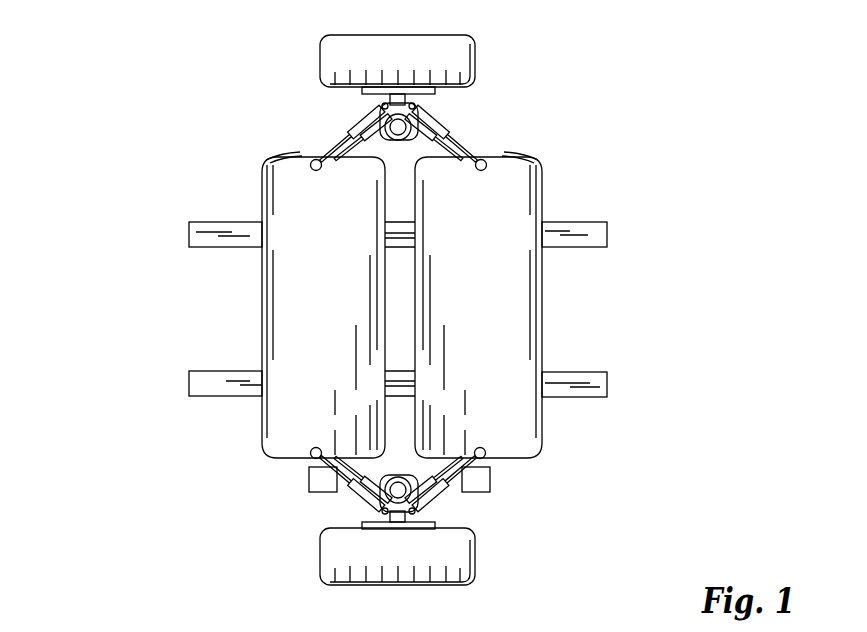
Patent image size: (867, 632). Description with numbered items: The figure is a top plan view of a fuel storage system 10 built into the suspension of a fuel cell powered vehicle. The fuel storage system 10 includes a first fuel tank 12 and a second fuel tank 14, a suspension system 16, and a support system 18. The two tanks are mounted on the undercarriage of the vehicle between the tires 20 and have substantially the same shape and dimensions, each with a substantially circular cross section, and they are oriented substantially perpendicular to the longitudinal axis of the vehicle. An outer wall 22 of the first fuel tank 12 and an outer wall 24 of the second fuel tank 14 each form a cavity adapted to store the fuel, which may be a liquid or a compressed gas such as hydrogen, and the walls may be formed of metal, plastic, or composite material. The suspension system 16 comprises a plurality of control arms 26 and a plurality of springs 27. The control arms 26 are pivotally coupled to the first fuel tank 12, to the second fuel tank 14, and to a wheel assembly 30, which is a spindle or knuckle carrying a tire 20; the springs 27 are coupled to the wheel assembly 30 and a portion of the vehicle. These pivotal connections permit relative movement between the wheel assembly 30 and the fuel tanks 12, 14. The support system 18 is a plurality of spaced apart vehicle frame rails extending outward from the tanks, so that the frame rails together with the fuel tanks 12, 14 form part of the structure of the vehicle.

The fuel storage system 10 is at (353, 324).
The first fuel tank 12 is at (276, 305).
The second fuel tank 14 is at (518, 305).
The suspension system 16 is at (388, 324).
The support system 18 is at (422, 313).
The tires 20 is at (412, 65).
The outer wall 22 is at (276, 307).
The outer wall 24 is at (526, 310).
The control arms 26 is at (358, 127).
The springs 27 is at (359, 312).
The wheel assembly 30 is at (428, 100).